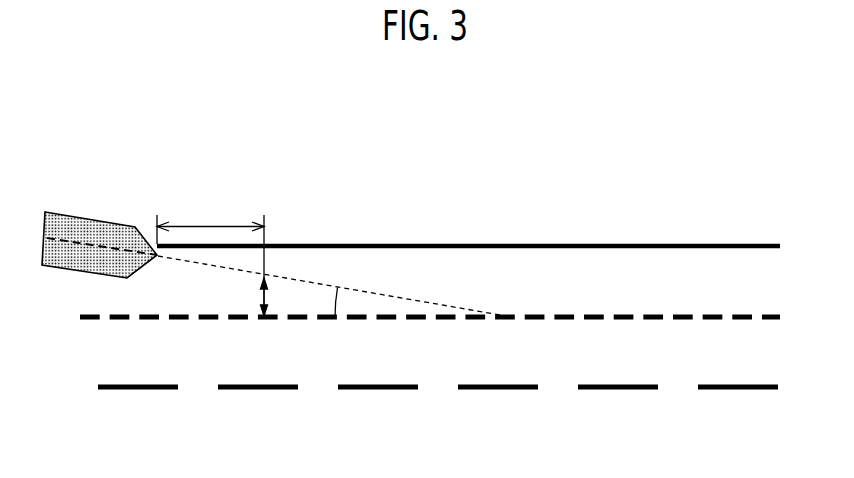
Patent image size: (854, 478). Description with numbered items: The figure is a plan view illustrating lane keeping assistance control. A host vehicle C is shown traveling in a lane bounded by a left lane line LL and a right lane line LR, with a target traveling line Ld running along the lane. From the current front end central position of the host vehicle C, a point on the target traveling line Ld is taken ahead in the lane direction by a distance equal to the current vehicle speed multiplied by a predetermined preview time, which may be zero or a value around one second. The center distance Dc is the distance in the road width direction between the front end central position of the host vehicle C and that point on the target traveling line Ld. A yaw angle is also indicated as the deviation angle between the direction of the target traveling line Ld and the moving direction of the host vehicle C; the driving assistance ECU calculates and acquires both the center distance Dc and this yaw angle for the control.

The host vehicle C is at (127, 226).
The left lane line LL is at (746, 244).
The right lane line LR is at (720, 390).
The target traveling line Ld is at (750, 316).
The center distance Dc is at (246, 297).